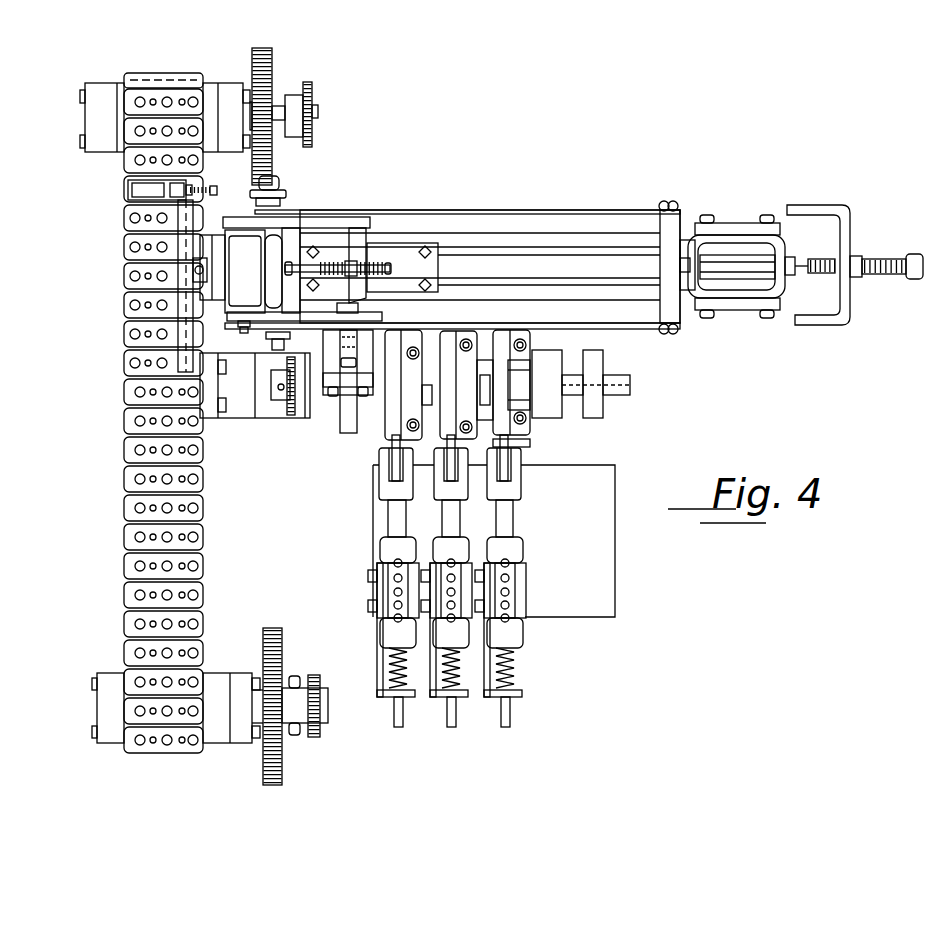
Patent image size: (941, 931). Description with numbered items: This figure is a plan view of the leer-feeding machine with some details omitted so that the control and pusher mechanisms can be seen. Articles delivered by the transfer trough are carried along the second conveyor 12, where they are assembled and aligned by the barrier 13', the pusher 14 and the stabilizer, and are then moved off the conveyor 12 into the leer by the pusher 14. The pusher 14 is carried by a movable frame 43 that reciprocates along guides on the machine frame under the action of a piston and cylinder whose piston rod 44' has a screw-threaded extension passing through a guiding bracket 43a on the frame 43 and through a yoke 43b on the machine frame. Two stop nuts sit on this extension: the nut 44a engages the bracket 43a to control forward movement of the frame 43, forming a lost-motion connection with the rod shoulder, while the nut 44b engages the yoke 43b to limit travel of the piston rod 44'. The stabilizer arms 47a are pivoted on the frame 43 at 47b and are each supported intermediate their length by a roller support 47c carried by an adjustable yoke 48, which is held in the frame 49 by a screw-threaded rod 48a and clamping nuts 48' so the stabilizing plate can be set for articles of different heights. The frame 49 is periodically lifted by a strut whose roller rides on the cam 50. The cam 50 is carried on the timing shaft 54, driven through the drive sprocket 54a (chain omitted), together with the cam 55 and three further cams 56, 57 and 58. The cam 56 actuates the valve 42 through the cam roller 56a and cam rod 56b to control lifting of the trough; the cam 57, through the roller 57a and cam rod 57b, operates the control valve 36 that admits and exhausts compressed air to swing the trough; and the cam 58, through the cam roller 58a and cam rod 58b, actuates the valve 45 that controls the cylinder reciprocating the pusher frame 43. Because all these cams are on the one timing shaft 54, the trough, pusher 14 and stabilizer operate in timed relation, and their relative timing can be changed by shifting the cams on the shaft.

The second conveyor 12 is at (126, 538).
The barrier 13' is at (141, 194).
The pusher 14 is at (182, 237).
The cam actuated control valve 36 is at (463, 640).
The valve 42 is at (392, 630).
The movable frame 43 is at (682, 219).
The guiding bracket 43a is at (770, 312).
The yoke 43b is at (850, 222).
The piston rod 44' is at (490, 247).
The stop nut 44a is at (792, 257).
The stop nut 44b is at (857, 258).
The cam controlled valve 45 is at (520, 634).
The arms 47a is at (468, 210).
The pivot 47b is at (690, 196).
The adjustable support 47c is at (294, 220).
The adjustable yoke 48 is at (311, 245).
The clamping nuts 48' is at (384, 204).
The screw threaded rod 48a is at (360, 262).
The frame 49 is at (293, 240).
The cam 50 is at (343, 427).
The timing shaft 54 is at (608, 390).
The drive sprocket 54a is at (290, 417).
The cam 55 is at (598, 362).
The cam 56 is at (395, 425).
The cam roller 56a is at (393, 478).
The cam rod 56b is at (398, 522).
The cam 57 is at (450, 425).
The roller 57a is at (448, 480).
The cam rod 57b is at (452, 521).
The cam 58 is at (507, 431).
The cam roller 58a is at (506, 448).
The cam rod 58b is at (510, 513).